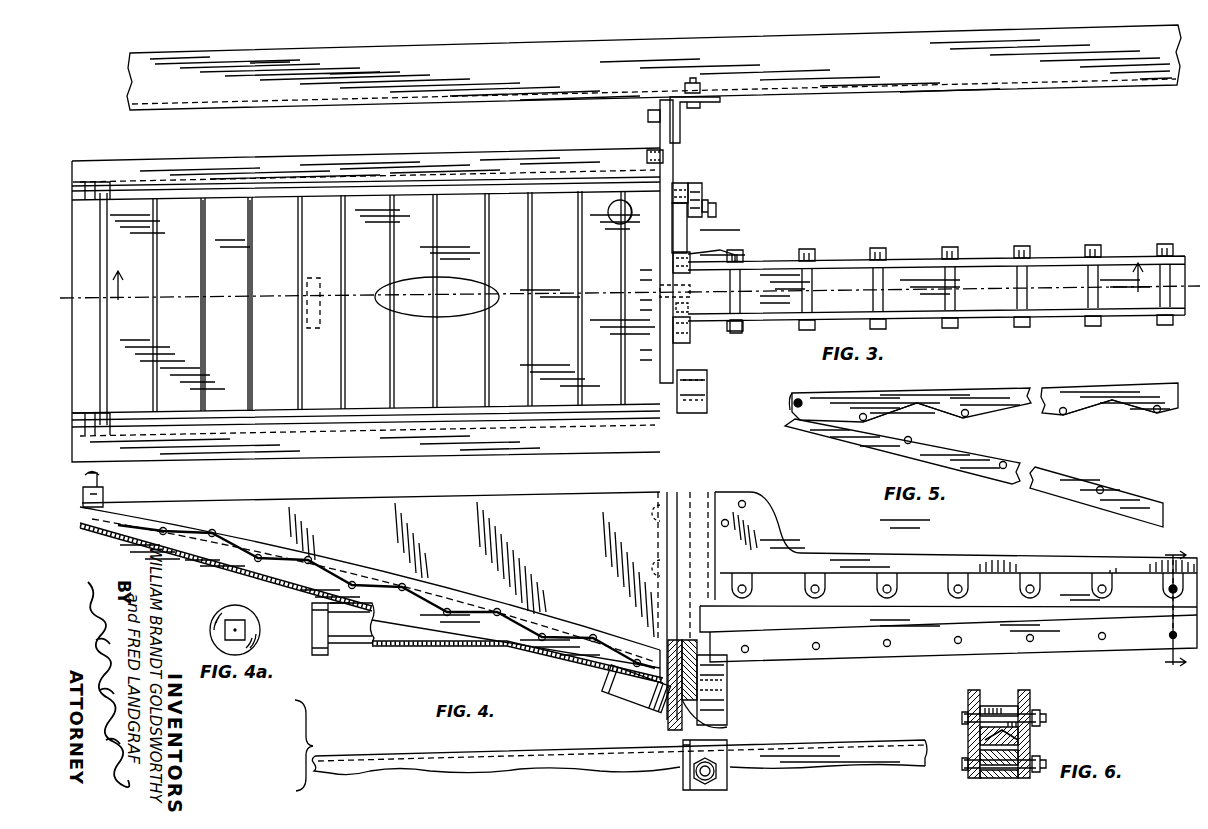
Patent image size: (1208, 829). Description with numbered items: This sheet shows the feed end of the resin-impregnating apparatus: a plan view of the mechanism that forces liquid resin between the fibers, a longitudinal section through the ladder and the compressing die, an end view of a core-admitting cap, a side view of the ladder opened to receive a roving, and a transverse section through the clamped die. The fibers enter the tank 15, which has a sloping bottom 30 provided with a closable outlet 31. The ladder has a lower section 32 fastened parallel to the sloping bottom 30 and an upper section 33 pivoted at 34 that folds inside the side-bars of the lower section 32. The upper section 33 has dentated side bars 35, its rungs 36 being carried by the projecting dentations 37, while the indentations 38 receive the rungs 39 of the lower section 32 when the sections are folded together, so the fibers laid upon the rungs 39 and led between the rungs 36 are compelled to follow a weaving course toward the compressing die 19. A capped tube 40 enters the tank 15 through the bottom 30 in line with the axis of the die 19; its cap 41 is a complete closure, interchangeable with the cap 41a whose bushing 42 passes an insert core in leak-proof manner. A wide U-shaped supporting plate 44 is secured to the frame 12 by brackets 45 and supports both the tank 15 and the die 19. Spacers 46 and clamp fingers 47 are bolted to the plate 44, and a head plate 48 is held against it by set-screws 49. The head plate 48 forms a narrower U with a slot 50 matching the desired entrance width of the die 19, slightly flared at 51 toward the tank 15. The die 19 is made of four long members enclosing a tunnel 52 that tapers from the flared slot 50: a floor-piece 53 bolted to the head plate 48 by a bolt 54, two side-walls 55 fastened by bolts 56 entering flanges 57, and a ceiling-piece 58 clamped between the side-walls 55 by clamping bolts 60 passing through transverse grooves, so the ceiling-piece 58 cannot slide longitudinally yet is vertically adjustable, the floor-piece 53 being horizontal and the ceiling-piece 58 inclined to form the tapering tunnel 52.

In FIG. 3, the frame 12 is at (930, 88).
In FIG. 4, the frame 12 is at (605, 768).
In FIG. 3, the tank 15 is at (438, 155).
In FIG. 4, the tank 15 is at (408, 503).
In FIG. 3, the compressing die 19 is at (914, 256).
In FIG. 4, the sloping bottom 30 is at (116, 538).
In FIG. 4, the closable outlet 31 is at (620, 695).
In FIG. 5, the lower section 32 is at (1096, 497).
In FIG. 5, the upper section 33 is at (1095, 390).
In FIG. 5, the pivot 34 is at (790, 401).
In FIG. 5, the dentated side bars 35 is at (1052, 396).
In FIG. 3, the rungs 36 is at (253, 247).
In FIG. 5, the rungs 36 is at (1066, 414).
In FIG. 5, the projecting dentations 37 is at (1052, 414).
In FIG. 5, the indentations 38 is at (917, 410).
In FIG. 3, the rungs 39 is at (206, 243).
In FIG. 5, the rungs 39 is at (904, 443).
In FIG. 4, the capped tube 40 is at (364, 645).
In FIG. 4, the cap 41 is at (320, 656).
In FIG. 4a, the cap 41a is at (253, 616).
In FIG. 4a, the bushing 42 is at (232, 620).
In FIG. 3, the supporting plate 44 is at (652, 130).
In FIG. 3, the brackets 45 is at (683, 133).
In FIG. 3, the spacers 46 is at (680, 188).
In FIG. 3, the clamp fingers 47 is at (703, 186).
In FIG. 3, the head plate 48 is at (688, 245).
In FIG. 3, the set-screws 49 is at (716, 208).
In FIG. 3, the slot 50 is at (671, 309).
In FIG. 3, the flare 51 is at (678, 314).
In FIG. 4, the tunnel 52 is at (868, 622).
In FIG. 6, the floor-piece 53 is at (985, 778).
In FIG. 4, the bolt 54 is at (667, 642).
In FIG. 3, the side-walls 55 is at (830, 262).
In FIG. 6, the side-walls 55 is at (968, 742).
In FIG. 3, the bolts 56 is at (672, 250).
In FIG. 3, the flanges 57 is at (738, 333).
In FIG. 6, the ceiling-piece 58 is at (1010, 706).
In FIG. 6, the clamping bolts 60 is at (1031, 731).